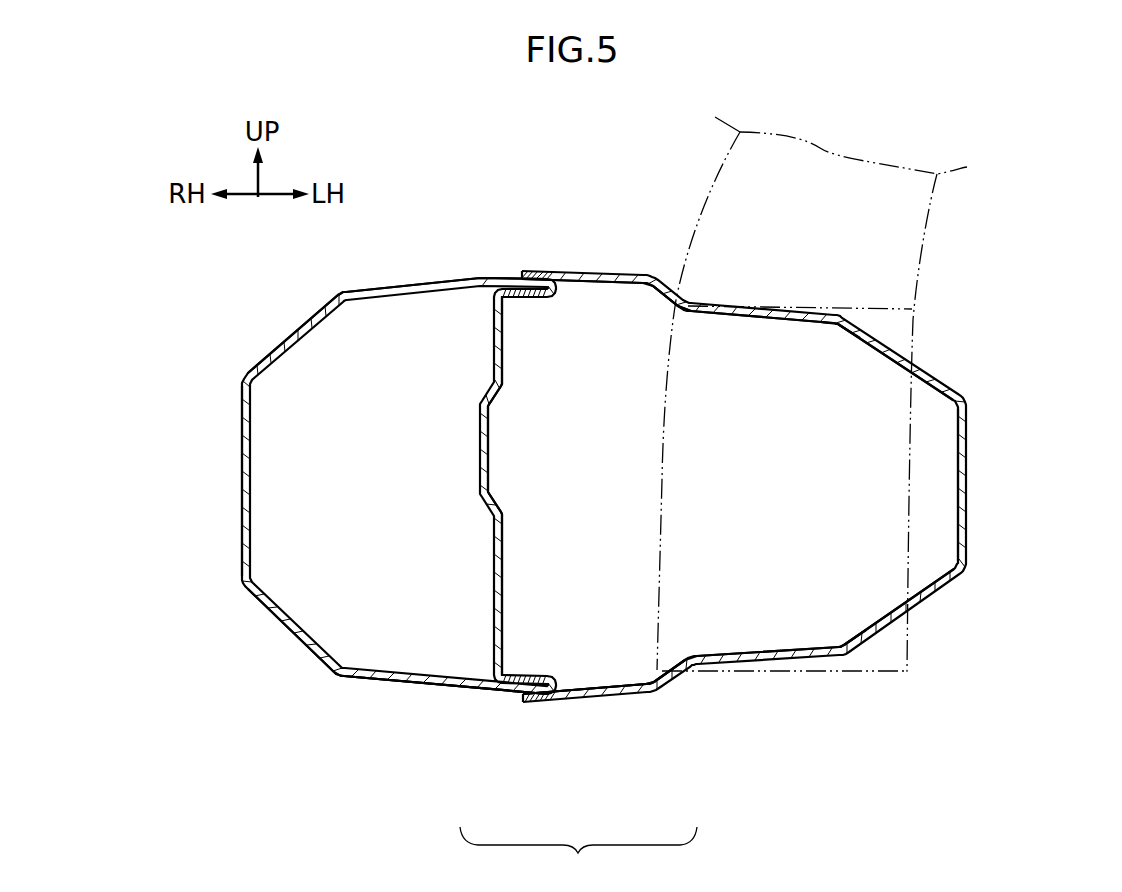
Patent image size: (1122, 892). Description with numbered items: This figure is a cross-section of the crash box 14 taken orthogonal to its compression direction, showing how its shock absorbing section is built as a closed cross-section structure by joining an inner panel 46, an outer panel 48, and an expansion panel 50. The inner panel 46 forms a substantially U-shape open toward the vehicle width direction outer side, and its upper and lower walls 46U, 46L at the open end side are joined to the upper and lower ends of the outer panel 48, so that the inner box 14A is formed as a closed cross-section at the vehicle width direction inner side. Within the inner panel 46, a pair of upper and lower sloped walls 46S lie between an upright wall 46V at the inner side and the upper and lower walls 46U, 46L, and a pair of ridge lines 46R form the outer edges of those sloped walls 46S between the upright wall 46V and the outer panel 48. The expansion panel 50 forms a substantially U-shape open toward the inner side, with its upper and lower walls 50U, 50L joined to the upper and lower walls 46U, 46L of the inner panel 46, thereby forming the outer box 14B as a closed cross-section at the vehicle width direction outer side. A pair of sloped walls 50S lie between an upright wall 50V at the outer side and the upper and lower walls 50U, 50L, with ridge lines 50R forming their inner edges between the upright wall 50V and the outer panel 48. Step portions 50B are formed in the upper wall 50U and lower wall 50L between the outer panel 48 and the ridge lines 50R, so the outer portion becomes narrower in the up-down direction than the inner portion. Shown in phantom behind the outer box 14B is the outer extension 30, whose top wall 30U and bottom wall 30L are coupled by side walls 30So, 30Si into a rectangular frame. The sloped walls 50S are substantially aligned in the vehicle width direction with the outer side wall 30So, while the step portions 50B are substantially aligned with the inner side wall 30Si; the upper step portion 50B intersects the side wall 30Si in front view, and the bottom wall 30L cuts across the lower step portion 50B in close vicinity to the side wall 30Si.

The crash box 14 is at (578, 859).
The inner box 14A is at (434, 718).
The outer box 14B is at (631, 712).
The outer extension 30 is at (934, 207).
The top wall 30U is at (843, 305).
The bottom wall 30L is at (830, 672).
The side wall 30Si is at (662, 558).
The side wall 30So is at (911, 478).
The inner panel 46 is at (389, 285).
The upper wall 46U is at (422, 298).
The lower wall 46L is at (388, 688).
The ridge line 46R is at (342, 295).
The sloped wall 46S is at (289, 349).
The upright wall 46V is at (250, 494).
The outer panel 48 is at (497, 494).
The expansion panel 50 is at (597, 268).
The upper wall 50U is at (613, 287).
The lower wall 50L is at (598, 687).
The step portion 50B is at (678, 311).
The ridge line 50R is at (840, 327).
The sloped wall 50S is at (932, 374).
The upright wall 50V is at (968, 480).